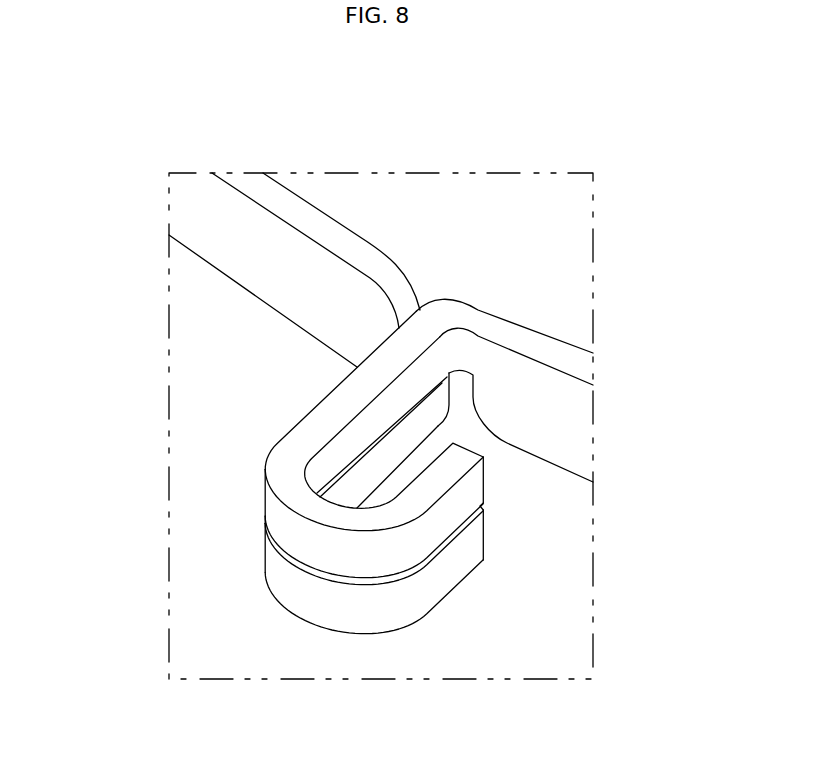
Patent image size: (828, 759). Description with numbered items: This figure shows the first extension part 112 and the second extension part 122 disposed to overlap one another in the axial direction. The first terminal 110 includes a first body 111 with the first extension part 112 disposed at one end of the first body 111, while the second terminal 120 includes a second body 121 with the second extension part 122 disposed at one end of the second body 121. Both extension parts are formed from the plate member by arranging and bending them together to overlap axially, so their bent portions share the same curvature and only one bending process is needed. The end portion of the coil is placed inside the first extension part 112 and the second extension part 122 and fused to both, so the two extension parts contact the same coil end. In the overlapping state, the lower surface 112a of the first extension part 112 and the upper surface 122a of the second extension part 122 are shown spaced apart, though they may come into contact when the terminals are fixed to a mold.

The first terminal 110 is at (551, 327).
The first body 111 is at (497, 331).
The first extension part 112 is at (318, 424).
The lower surface 112a is at (310, 565).
The second terminal 120 is at (321, 204).
The second body 121 is at (360, 253).
The second extension part 122 is at (382, 613).
The upper surface 122a is at (335, 586).